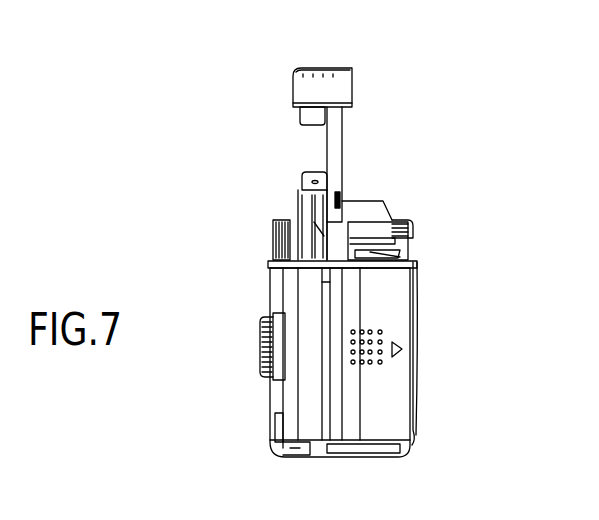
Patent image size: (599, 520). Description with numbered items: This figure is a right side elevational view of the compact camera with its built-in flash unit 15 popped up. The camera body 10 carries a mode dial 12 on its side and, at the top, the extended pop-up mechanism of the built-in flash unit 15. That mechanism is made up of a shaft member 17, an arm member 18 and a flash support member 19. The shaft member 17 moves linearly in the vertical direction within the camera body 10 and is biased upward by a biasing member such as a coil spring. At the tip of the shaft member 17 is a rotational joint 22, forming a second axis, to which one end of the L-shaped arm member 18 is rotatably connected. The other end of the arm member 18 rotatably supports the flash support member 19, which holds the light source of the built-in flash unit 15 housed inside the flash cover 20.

The camera body 10 is at (470, 407).
The mode dial 12 is at (280, 220).
The built-in flash unit 15 is at (324, 66).
The shaft member 17 is at (297, 207).
The arm member 18 is at (343, 141).
The flash support member 19 is at (300, 112).
The flash cover 20 is at (353, 86).
The rotational joint 22 is at (297, 173).